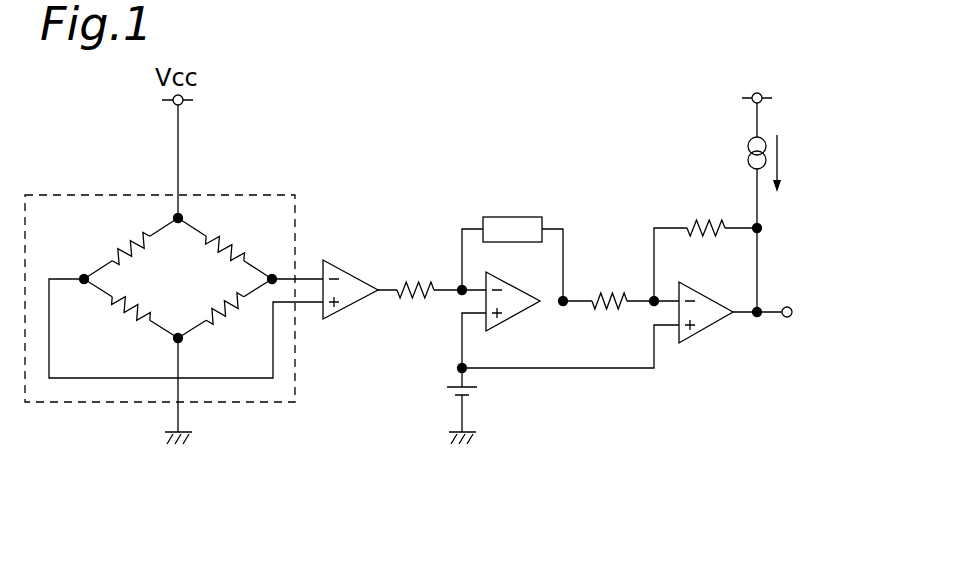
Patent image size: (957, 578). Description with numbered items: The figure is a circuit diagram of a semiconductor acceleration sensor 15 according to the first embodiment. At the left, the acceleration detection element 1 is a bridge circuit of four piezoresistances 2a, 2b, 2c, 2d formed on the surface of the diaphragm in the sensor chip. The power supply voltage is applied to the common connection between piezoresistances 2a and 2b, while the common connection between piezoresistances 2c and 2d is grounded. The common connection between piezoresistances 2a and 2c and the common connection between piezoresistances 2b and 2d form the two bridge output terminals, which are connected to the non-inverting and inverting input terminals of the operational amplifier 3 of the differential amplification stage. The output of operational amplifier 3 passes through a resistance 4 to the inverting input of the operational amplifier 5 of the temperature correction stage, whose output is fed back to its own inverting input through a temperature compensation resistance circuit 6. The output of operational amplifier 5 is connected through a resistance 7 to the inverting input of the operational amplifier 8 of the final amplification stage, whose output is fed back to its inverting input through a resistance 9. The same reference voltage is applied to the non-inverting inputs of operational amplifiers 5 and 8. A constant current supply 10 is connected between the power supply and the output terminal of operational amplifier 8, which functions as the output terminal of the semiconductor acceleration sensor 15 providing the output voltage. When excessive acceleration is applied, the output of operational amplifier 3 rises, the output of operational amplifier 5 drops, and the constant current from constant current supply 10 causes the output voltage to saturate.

The acceleration detection element 1 is at (270, 190).
The piezoresistance 2a is at (132, 245).
The piezoresistance 2b is at (230, 234).
The piezoresistance 2c is at (128, 317).
The piezoresistance 2d is at (228, 326).
The operational amplifier 3 is at (352, 306).
The resistance 4 is at (413, 280).
The operational amplifier 5 is at (520, 313).
The temperature compensation resistance circuit 6 is at (517, 217).
The resistance 7 is at (607, 290).
The operational amplifier 8 is at (703, 331).
The resistance 9 is at (703, 218).
The constant current supply 10 is at (748, 145).
The semiconductor acceleration sensor 15 is at (448, 181).